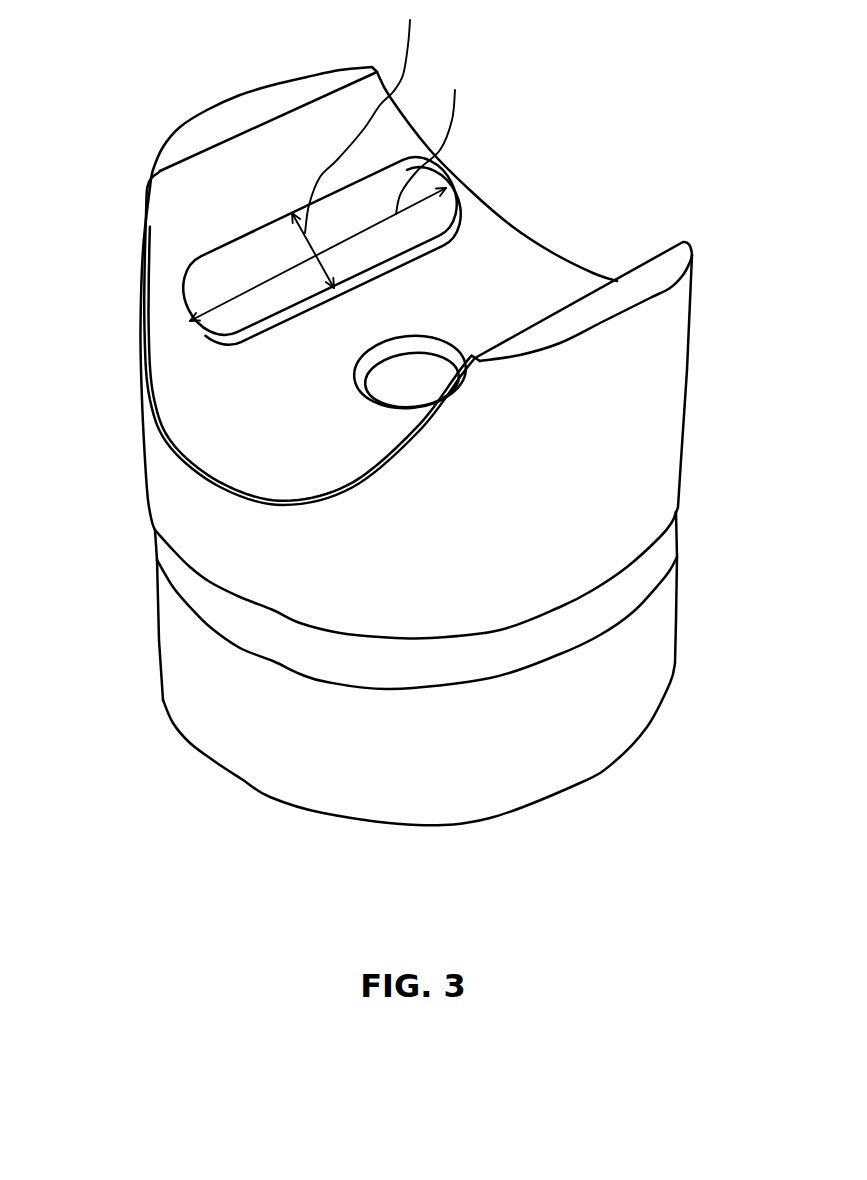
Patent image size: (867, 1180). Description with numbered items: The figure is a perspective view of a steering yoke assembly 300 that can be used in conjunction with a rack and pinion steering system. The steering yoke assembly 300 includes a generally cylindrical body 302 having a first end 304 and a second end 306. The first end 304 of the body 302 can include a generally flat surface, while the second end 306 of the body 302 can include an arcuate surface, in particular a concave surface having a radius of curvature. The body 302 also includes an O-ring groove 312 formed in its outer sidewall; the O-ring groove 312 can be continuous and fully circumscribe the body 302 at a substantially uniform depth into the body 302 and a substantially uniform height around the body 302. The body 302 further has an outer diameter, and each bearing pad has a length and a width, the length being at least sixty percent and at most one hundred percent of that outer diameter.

The steering yoke assembly 300 is at (613, 80).
The body 302 is at (683, 483).
The first end 304 is at (193, 710).
The second end 306 is at (145, 443).
The O-ring groove 312 is at (670, 537).